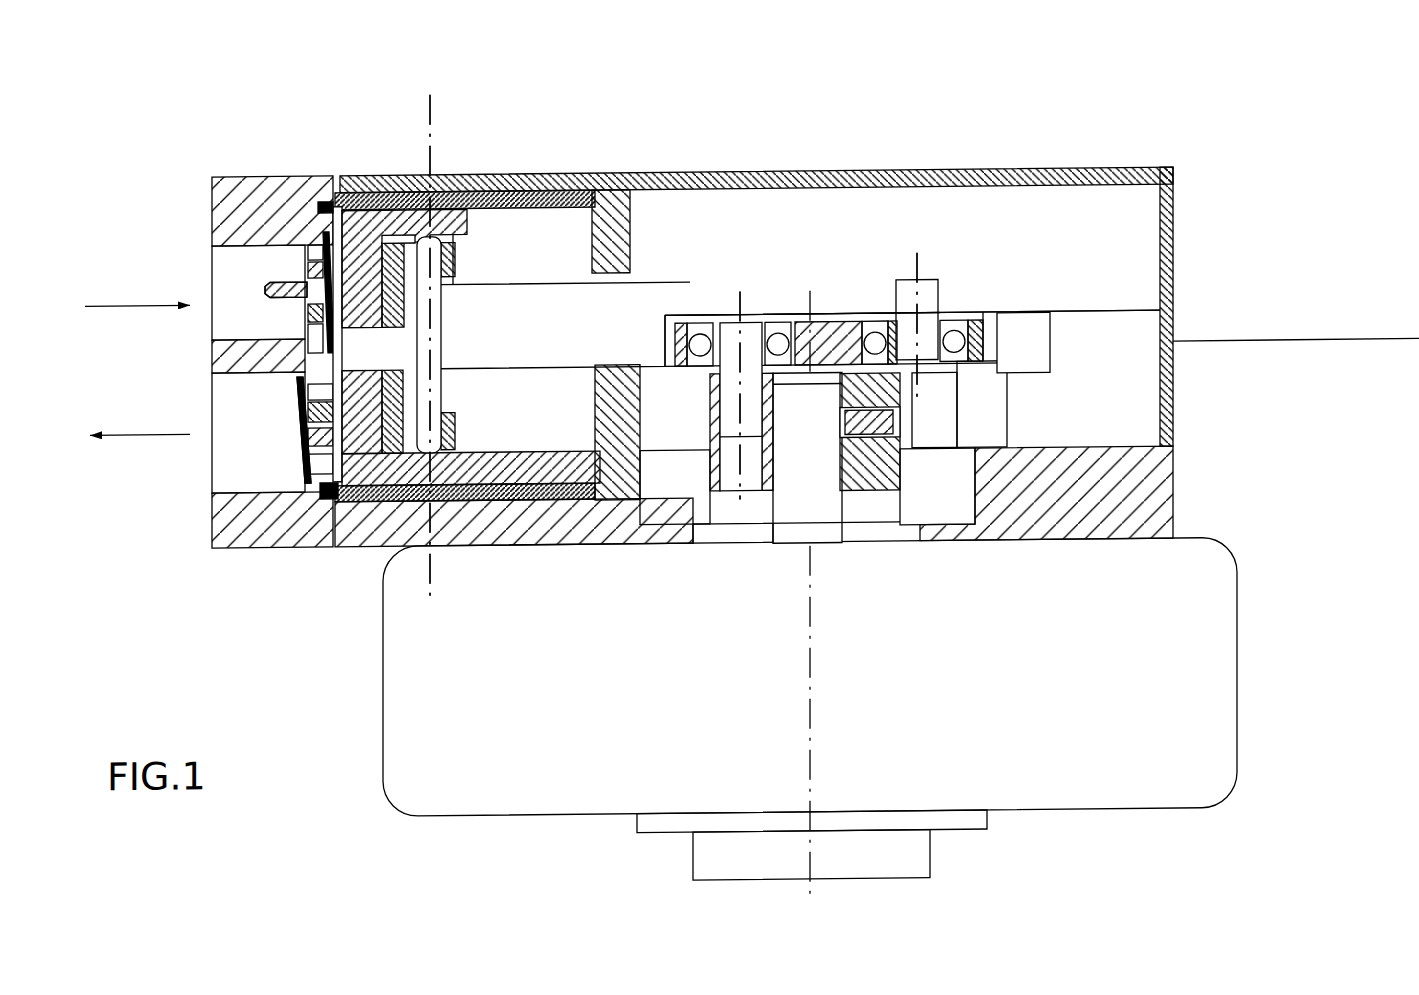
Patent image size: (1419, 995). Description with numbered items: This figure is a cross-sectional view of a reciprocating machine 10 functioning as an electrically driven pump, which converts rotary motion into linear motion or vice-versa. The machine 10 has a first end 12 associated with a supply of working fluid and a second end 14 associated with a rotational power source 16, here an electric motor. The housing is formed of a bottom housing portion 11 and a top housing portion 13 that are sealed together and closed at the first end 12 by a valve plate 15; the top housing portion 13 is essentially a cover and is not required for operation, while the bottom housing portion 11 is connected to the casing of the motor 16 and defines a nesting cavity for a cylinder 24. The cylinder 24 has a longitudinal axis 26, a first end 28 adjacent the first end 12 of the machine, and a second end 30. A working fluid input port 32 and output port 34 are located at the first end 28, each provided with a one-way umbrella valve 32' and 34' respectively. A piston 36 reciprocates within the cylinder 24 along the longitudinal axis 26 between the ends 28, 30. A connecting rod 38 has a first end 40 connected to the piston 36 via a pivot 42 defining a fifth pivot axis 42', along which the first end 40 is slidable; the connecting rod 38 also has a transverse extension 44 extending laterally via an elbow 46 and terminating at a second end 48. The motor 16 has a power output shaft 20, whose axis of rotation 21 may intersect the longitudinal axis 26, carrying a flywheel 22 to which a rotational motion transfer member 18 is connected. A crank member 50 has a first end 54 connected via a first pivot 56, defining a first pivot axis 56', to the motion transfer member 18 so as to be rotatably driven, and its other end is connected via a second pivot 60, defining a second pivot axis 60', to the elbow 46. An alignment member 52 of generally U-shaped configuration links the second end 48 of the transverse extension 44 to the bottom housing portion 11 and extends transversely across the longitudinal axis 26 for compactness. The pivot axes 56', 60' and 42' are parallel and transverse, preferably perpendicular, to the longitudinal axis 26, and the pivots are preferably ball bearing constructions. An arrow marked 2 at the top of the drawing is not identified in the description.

The pump assembly 2 is at (725, 100).
The reciprocating machine 10 is at (1268, 304).
The bottom housing portion 11 is at (1150, 517).
The first end 12 is at (228, 158).
The top housing portion 13 is at (1170, 197).
The second end 14 is at (1255, 453).
The valve plate 15 is at (255, 531).
The rotational power source 16 is at (607, 783).
The rotational motion transfer member 18 is at (730, 398).
The power output shaft 20 is at (793, 483).
The axis of rotation 21 is at (810, 644).
The flywheel 22 is at (877, 469).
The cylinder 24 is at (378, 501).
The longitudinal axis 26 is at (230, 342).
The first end of cylinder 28 is at (350, 159).
The second end of cylinder 30 is at (562, 158).
The working fluid input port 32 is at (195, 293).
The one-way umbrella valve 32' is at (222, 282).
The working fluid output port 34 is at (197, 433).
The one-way umbrella valve 34' is at (236, 439).
The piston 36 is at (382, 274).
The connecting rod 38 is at (641, 314).
The first end of connecting rod 40 is at (345, 496).
The pivot 42 is at (451, 276).
The fifth pivot axis 42' is at (453, 333).
The transverse extension 44 is at (922, 338).
The elbow 46 is at (778, 343).
The second end of transverse extension 48 is at (875, 342).
The crank member 50 is at (829, 323).
The alignment member 52 is at (983, 333).
The first end of crank member 54 is at (687, 313).
The first pivot 56 is at (766, 368).
The first pivot axis 56' is at (770, 351).
The second pivot 60 is at (953, 316).
The second pivot axis 60' is at (934, 299).